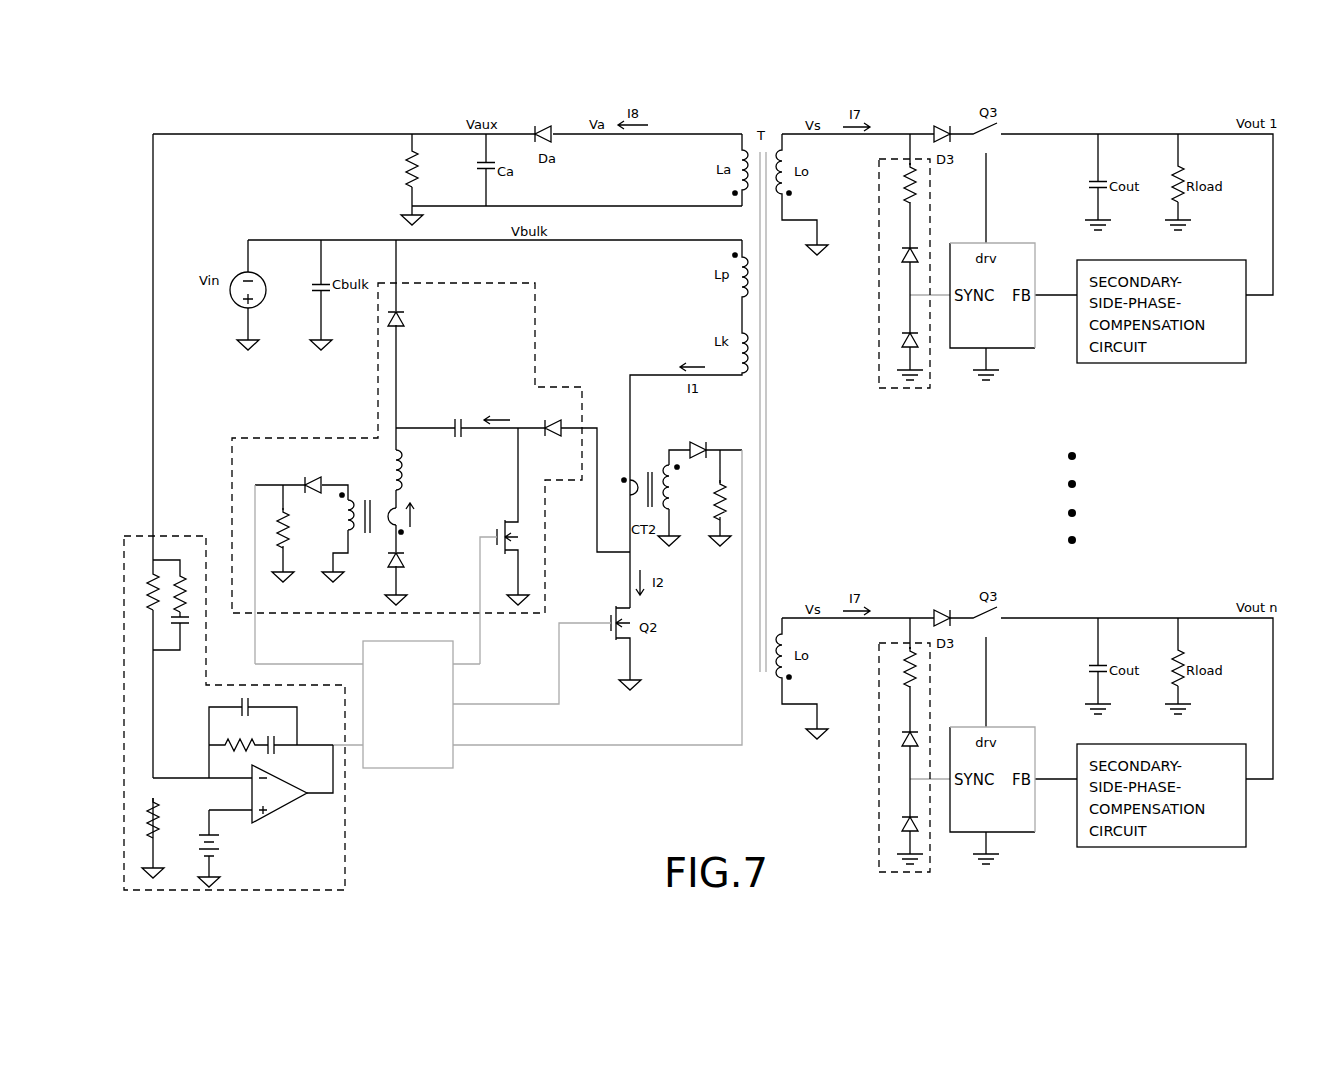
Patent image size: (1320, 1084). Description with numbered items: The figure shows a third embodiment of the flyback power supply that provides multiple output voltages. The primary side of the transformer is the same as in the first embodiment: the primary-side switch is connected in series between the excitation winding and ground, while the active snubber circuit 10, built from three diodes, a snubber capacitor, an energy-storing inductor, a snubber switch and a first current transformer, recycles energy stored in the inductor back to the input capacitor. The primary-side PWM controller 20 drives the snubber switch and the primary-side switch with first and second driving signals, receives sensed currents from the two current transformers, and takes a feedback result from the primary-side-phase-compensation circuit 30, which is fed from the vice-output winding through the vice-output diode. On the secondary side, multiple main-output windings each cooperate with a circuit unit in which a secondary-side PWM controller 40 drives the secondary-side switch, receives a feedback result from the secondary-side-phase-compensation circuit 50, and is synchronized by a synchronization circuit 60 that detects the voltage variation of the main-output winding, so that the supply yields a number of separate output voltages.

The active snubber circuit 10 is at (535, 331).
The primary-side PWM controller 20 is at (418, 768).
The primary-side-phase-compensation circuit 30 is at (345, 845).
The secondary-side PWM controller 40 is at (1017, 348).
The secondary-side-phase-compensation circuit 50 is at (1195, 363).
The synchronization circuit 60 is at (879, 342).